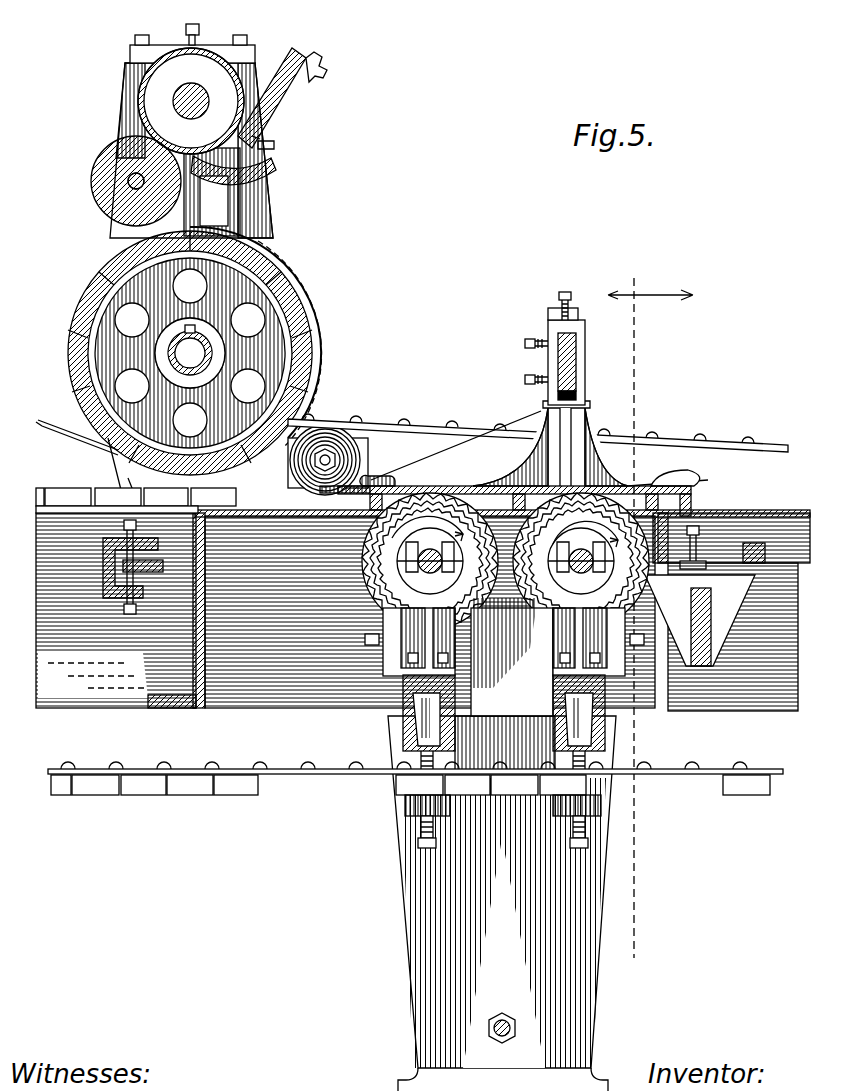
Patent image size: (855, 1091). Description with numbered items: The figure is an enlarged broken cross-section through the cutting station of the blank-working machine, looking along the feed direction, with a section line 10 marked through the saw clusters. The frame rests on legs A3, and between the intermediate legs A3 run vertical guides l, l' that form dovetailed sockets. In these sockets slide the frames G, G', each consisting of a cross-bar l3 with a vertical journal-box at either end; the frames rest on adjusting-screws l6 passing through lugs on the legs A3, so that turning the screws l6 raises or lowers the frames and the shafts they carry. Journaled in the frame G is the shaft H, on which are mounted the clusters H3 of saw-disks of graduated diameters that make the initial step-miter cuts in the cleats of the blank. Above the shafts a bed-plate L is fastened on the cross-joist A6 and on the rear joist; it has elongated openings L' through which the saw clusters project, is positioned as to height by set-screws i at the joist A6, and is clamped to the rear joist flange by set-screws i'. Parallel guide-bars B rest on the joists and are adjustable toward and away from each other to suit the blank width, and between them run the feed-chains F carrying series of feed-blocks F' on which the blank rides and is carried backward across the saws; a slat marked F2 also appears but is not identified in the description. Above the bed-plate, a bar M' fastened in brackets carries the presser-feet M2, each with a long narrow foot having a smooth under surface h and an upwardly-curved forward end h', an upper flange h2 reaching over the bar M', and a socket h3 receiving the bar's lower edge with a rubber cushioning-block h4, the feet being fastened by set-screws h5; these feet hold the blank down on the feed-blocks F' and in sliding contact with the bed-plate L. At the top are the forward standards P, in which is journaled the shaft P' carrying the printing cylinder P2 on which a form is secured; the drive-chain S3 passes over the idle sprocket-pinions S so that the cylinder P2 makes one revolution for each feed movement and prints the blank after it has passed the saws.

The forward cheeks or standards P is at (209, 131).
The cylinder P2 is at (298, 270).
The shaft P' is at (281, 337).
The idle sprocket-pinions S is at (318, 450).
The drive-chain S3 is at (370, 414).
The bar M' is at (590, 356).
The presser-feet M2 is at (470, 462).
The under surface h is at (538, 464).
The upwardly-curved forward end h' is at (698, 464).
The flange h2 is at (577, 312).
The socket h3 is at (548, 392).
The cushioning-block h4 is at (577, 383).
The set-screws h5 is at (555, 283).
The section line 10 is at (650, 611).
The elongated openings L' is at (517, 459).
The bed-plate L is at (259, 500).
The clusters of saws H3 is at (612, 470).
The slat F2 is at (725, 482).
The feed-blocks F' is at (406, 640).
The feed-chains F is at (665, 754).
The guide-bars B is at (80, 550).
The set-screws i is at (414, 530).
The set-screws i' is at (411, 584).
The legs A3 is at (215, 616).
The cross-joist A6 is at (700, 625).
The shaft H is at (470, 600).
The vertical guides l is at (481, 657).
The vertical guides l' is at (503, 733).
The cross-bar l3 is at (365, 606).
The adjusting-screws l6 is at (410, 835).
The frame G is at (565, 713).
The frame G' is at (370, 735).